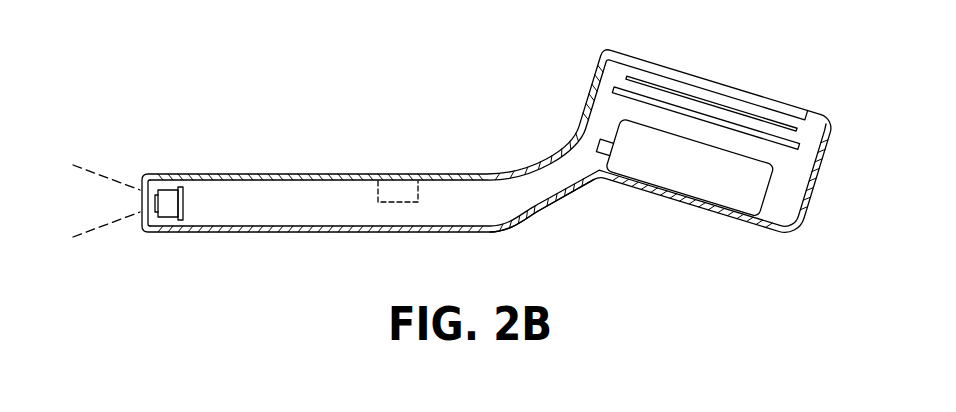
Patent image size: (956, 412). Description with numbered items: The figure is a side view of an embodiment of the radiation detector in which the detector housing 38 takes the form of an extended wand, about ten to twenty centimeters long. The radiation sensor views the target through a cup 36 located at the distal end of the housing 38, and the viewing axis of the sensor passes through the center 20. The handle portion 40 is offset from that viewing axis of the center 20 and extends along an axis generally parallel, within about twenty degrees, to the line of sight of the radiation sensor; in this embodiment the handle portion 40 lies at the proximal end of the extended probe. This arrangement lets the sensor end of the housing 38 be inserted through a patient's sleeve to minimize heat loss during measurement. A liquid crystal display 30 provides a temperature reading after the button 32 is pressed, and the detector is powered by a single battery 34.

The center 20 is at (170, 190).
The liquid crystal display 30 is at (725, 83).
The button 32 is at (405, 178).
The battery 34 is at (665, 183).
The cup 36 is at (157, 213).
The housing 38 is at (533, 217).
The handle portion 40 is at (587, 102).